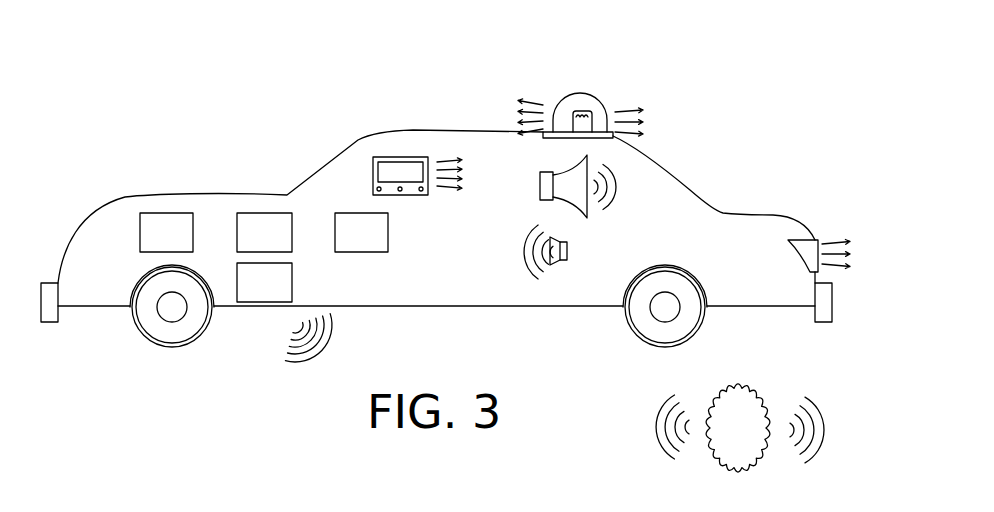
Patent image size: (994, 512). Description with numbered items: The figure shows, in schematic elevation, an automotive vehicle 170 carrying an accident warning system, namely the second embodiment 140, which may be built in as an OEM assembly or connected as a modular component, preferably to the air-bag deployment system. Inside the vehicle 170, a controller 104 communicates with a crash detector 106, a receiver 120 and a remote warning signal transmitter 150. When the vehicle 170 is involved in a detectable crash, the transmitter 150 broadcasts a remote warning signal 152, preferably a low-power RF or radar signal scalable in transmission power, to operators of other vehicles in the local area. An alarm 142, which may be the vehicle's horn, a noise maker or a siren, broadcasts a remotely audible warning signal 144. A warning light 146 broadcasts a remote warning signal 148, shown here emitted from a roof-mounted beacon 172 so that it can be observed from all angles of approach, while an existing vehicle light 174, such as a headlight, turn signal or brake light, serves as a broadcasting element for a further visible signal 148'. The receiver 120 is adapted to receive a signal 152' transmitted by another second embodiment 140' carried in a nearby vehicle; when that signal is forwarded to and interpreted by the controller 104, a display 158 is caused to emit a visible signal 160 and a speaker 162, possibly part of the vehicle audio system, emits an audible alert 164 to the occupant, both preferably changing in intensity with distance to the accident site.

The automotive vehicle 170 is at (95, 186).
The crash detector 106 is at (147, 245).
The receiver 120 is at (245, 245).
The remote warning signal transmitter 150 is at (245, 295).
The controller 104 is at (342, 245).
The display 158 is at (395, 168).
The visible signal 160 is at (447, 157).
The remote warning signal 148 is at (503, 93).
The roof-mounted beacon 172 is at (572, 108).
The warning light 146 is at (632, 81).
The second embodiment 140 is at (797, 118).
The alarm 142 is at (543, 183).
The sonic signal 144 is at (622, 200).
The speaker 162 is at (557, 265).
The local sound output 164 is at (522, 262).
The vehicle light 174 is at (813, 243).
The visible signal 148' is at (876, 269).
The remote warning signal 152 is at (333, 343).
The second embodiment 140' is at (758, 400).
The signal 152' is at (641, 427).